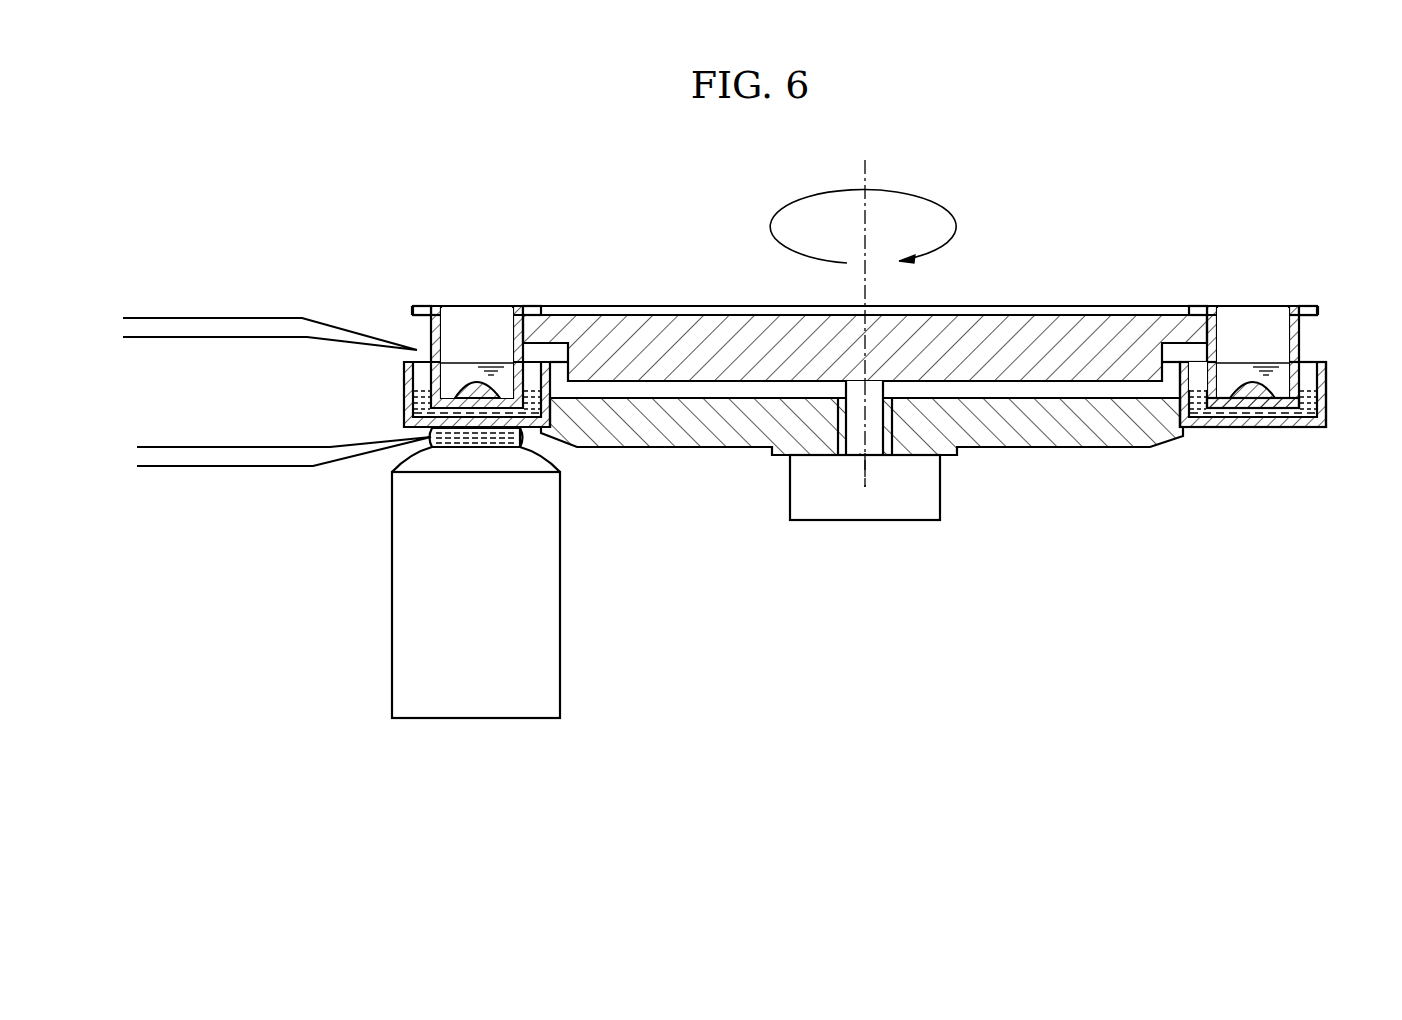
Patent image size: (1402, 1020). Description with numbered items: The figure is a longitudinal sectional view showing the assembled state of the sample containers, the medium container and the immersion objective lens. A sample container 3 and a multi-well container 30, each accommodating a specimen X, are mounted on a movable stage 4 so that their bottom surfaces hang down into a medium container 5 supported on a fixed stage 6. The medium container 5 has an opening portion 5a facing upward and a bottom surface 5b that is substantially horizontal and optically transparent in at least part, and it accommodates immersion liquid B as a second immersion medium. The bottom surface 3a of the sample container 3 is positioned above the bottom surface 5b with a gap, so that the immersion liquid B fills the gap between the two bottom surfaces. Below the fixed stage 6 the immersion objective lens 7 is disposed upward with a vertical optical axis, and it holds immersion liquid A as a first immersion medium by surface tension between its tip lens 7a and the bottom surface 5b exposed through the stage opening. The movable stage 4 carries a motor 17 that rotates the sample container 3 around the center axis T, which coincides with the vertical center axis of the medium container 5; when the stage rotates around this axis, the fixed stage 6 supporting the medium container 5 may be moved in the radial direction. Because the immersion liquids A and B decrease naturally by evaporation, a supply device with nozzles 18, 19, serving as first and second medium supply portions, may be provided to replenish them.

The sample container 3 is at (507, 290).
The bottom surface 3a is at (1230, 401).
The movable stage 4 is at (1023, 315).
The medium container 5 is at (1335, 433).
The opening portion 5a is at (1200, 367).
The bottom surface 5b is at (1312, 412).
The fixed stage 6 is at (735, 448).
The immersion objective lens 7 is at (513, 730).
The tip lens 7a is at (430, 446).
The motor 17 is at (883, 522).
The nozzle 18 is at (217, 467).
The nozzle 19 is at (200, 317).
The multi-well container 30 is at (1306, 306).
The immersion liquid A is at (523, 438).
The immersion liquid B is at (415, 374).
The specimen X is at (471, 380).
The center axis T is at (863, 174).